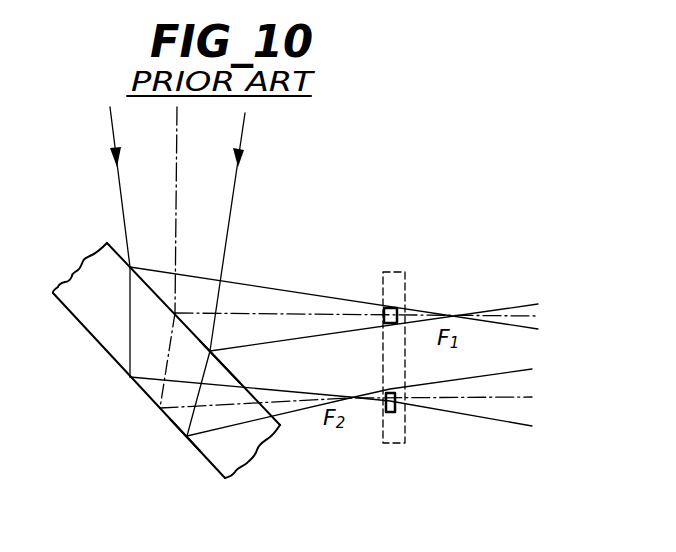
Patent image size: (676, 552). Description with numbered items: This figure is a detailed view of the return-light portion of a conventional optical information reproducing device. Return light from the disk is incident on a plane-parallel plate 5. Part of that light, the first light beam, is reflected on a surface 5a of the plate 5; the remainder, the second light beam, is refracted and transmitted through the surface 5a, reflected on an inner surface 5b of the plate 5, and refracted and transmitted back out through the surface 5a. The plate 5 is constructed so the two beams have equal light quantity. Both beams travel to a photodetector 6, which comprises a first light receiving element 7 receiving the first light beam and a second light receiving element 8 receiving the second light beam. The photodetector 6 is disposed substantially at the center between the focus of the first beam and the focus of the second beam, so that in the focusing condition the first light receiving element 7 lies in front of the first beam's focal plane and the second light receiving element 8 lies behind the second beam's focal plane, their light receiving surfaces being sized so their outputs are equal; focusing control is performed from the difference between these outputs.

The plane-parallel plate 5 is at (108, 342).
The surface of the plate 5a is at (282, 420).
The inner surface of the plate 5b is at (232, 470).
The photodetector 6 is at (405, 278).
The first light receiving element 7 is at (382, 312).
The second light receiving element 8 is at (385, 412).